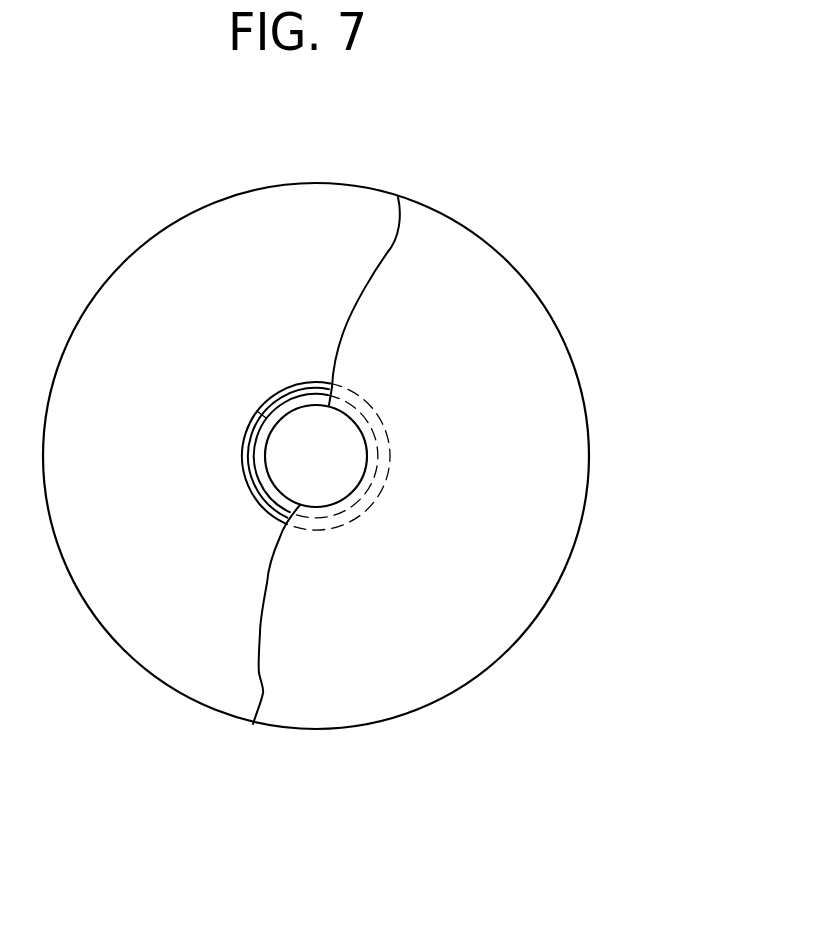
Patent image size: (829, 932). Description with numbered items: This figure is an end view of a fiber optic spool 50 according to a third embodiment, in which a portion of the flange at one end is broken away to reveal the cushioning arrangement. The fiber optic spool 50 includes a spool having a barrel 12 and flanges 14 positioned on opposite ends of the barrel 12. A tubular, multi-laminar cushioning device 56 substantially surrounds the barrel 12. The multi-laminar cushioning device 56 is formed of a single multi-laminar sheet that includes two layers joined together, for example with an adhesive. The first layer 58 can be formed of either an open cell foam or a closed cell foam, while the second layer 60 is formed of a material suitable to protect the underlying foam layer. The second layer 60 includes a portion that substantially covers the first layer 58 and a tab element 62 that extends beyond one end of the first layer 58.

The barrel 12 is at (275, 492).
The flanges 14 is at (205, 227).
The fiber optic spool 50 is at (394, 453).
The multi-laminar cushioning device 56 is at (262, 407).
The first layer 58 is at (315, 397).
The second layer 60 is at (250, 477).
The tab element 62 is at (288, 383).